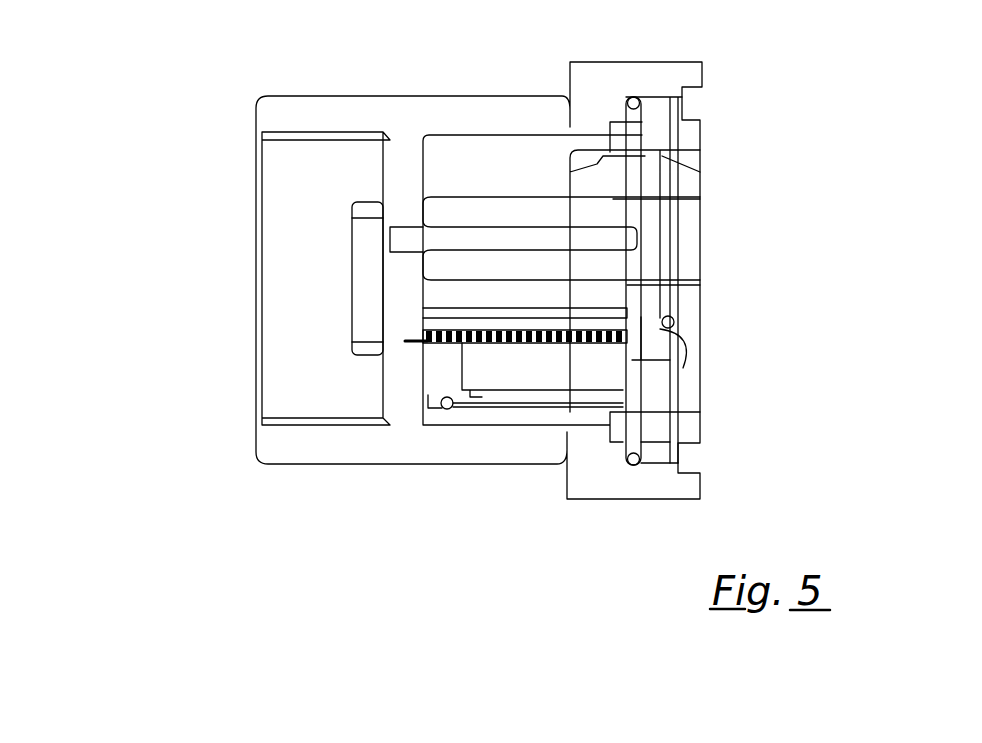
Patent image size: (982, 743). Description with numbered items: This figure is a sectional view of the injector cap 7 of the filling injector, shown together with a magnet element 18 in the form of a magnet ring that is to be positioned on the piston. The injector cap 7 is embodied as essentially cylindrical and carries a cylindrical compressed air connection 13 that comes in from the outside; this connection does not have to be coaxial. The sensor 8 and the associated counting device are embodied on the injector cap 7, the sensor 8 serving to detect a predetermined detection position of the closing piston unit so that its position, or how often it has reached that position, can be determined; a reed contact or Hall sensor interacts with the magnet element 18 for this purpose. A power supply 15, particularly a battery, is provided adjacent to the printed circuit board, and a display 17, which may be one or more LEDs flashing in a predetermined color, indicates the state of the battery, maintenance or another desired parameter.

The injector cap 7 is at (198, 262).
The sensor 8 is at (452, 332).
The compressed air connection 13 is at (707, 240).
The power supply 15 is at (488, 373).
The display 17 is at (655, 345).
The magnet element 18 is at (362, 268).